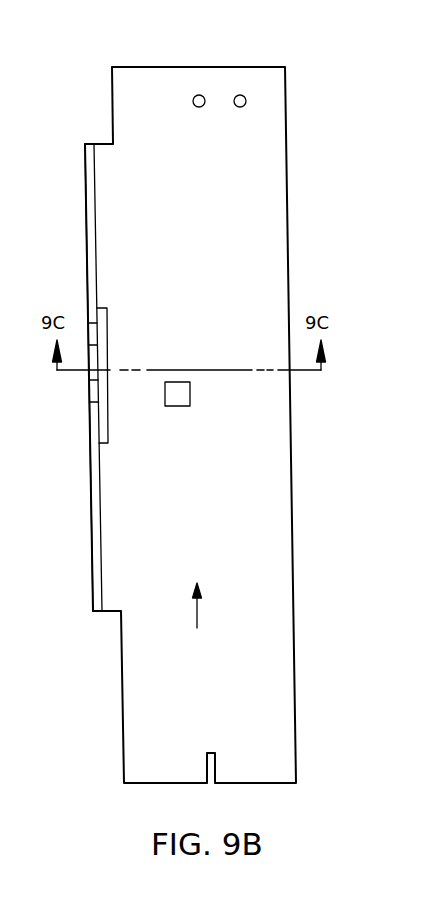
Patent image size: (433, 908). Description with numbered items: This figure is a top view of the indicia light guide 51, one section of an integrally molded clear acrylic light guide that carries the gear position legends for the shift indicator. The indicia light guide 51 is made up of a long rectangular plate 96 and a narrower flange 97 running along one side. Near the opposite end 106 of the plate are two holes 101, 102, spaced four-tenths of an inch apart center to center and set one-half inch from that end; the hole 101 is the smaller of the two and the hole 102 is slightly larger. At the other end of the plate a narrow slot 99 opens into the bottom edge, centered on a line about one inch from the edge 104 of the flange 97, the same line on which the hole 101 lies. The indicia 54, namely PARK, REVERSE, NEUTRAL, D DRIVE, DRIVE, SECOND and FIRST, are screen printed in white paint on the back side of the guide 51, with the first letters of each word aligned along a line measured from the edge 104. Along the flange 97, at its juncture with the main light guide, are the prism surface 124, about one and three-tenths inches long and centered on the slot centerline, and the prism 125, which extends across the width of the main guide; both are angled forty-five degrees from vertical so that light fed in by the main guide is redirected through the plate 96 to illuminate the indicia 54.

The indicia light guide 51 is at (280, 647).
The rectangular plate 96 is at (282, 711).
The opposite end 106 is at (175, 66).
The hole 101 is at (203, 94).
The hole 102 is at (248, 94).
The flange 97 is at (105, 145).
The prism 125 is at (92, 441).
The prism surface 124 is at (100, 318).
The edge 104 is at (100, 586).
The slot 99 is at (210, 767).
The indicia 54 is at (197, 618).